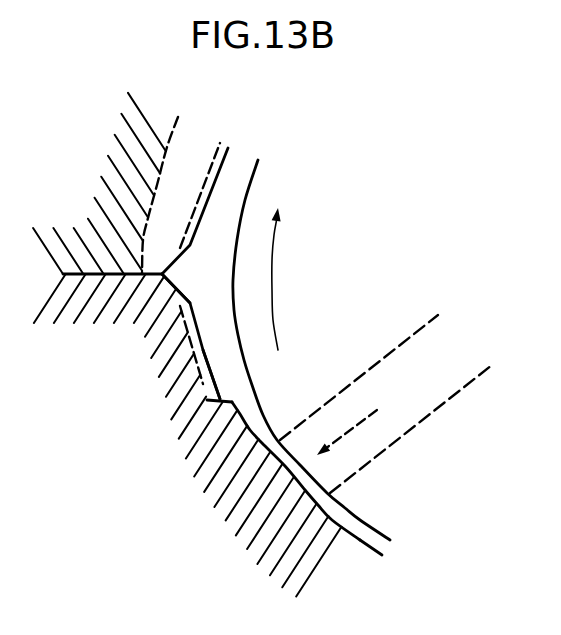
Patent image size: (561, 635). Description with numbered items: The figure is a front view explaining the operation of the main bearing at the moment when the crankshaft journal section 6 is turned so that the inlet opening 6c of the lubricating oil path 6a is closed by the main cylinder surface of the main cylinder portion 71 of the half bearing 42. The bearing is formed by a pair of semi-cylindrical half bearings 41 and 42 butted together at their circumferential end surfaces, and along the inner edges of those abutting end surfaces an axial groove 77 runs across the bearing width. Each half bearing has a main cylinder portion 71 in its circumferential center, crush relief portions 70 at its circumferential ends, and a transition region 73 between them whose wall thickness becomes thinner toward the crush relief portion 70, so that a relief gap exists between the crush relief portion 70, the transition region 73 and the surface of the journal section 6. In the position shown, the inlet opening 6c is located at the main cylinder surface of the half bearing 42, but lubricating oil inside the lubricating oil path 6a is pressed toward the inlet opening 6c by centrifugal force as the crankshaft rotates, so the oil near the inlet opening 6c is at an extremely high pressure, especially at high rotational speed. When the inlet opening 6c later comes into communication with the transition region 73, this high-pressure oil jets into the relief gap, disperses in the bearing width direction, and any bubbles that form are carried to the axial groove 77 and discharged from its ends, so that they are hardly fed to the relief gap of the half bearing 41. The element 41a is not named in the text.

The journal section 6 is at (394, 189).
The lubricating oil path 6a is at (428, 385).
The inlet opening 6c is at (302, 470).
The half bearing 41 is at (64, 200).
The seat face 41a is at (185, 138).
The half bearing 42 is at (114, 448).
The crush relief portion 70 is at (220, 167).
The main cylinder portion 71 is at (361, 540).
The transition region 73 is at (233, 401).
The axial groove 77 is at (195, 280).